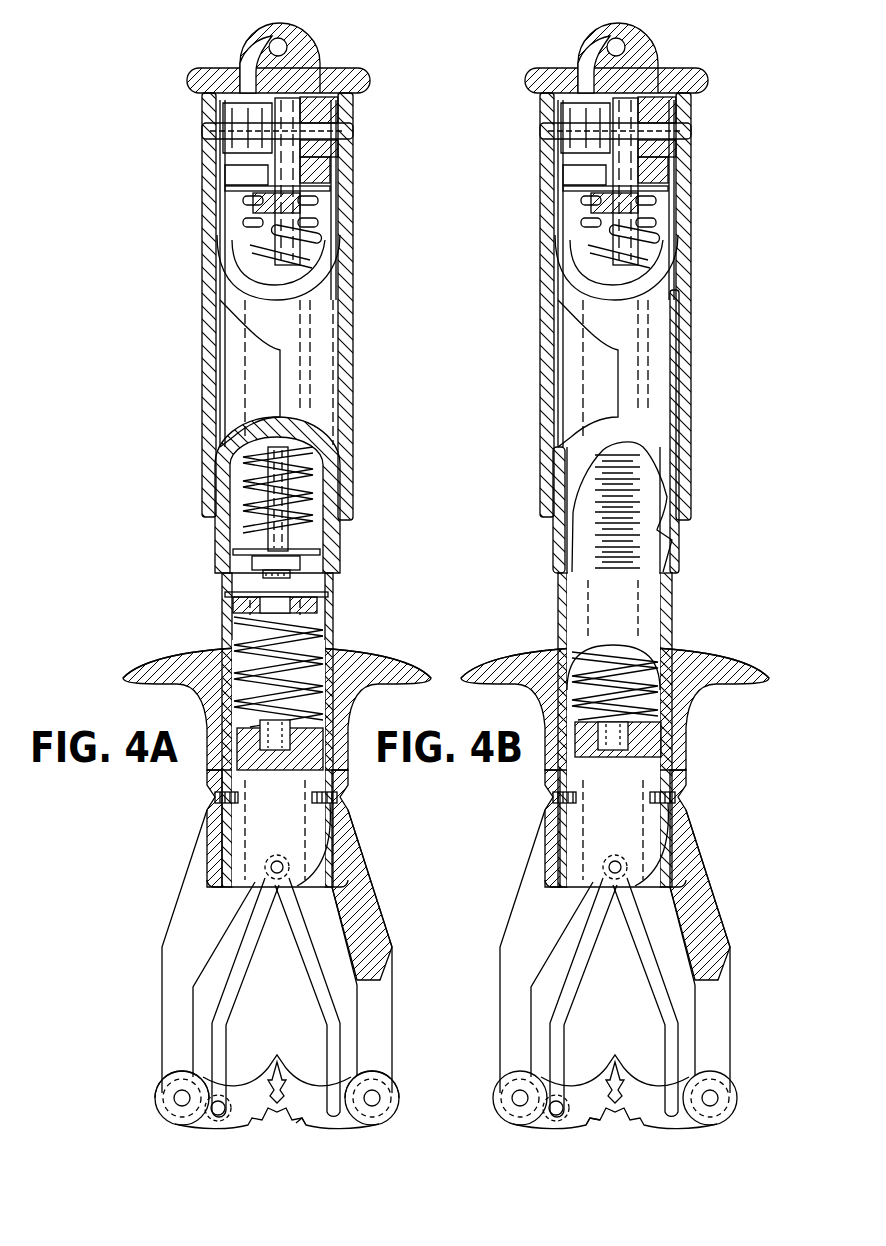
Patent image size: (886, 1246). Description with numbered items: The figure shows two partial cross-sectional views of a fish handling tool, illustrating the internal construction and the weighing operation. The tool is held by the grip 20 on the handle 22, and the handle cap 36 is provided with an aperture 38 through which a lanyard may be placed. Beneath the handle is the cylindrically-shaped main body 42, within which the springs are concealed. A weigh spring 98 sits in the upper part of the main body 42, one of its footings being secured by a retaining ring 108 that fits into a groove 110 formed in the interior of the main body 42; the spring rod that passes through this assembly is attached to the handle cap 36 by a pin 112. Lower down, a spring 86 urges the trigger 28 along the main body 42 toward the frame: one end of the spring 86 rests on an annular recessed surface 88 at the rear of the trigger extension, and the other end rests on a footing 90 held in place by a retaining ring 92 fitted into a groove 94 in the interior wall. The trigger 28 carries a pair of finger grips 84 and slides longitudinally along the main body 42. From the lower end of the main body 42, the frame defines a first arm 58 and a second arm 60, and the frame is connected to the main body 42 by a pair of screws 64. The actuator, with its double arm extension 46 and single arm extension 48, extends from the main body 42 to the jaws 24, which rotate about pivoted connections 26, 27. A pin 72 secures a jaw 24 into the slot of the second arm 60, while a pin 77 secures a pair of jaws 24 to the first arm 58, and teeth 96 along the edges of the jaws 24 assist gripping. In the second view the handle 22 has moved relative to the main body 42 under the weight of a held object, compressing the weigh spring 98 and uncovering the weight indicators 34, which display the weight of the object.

In FIG. 4A, the grip 20 is at (353, 333).
In FIG. 4B, the grip 20 is at (645, 306).
In FIG. 4A, the handle 22 is at (341, 537).
In FIG. 4B, the handle 22 is at (650, 431).
In FIG. 4A, the jaws 24 is at (172, 1130).
In FIG. 4B, the jaws 24 is at (643, 1104).
In FIG. 4A, the pivoted connection 26 is at (143, 1078).
In FIG. 4A, the pivoted connection 27 is at (402, 1083).
In FIG. 4A, the trigger 28 is at (118, 672).
In FIG. 4B, the trigger 28 is at (642, 655).
In FIG. 4B, the indicators 34 is at (656, 525).
In FIG. 4A, the handle cap 36 is at (190, 77).
In FIG. 4B, the handle cap 36 is at (579, 64).
In FIG. 4A, the aperture 38 is at (283, 45).
In FIG. 4B, the aperture 38 is at (645, 50).
In FIG. 4A, the main body 42 is at (330, 583).
In FIG. 4B, the main body 42 is at (657, 667).
In FIG. 4B, the double arm extension 46 is at (642, 997).
In FIG. 4A, the single arm extension 48 is at (235, 990).
In FIG. 4A, the first arm 58 is at (177, 912).
In FIG. 4B, the second arm 60 is at (735, 951).
In FIG. 4A, the screws 64 is at (348, 797).
In FIG. 4B, the screws 64 is at (648, 804).
In FIG. 4B, the pin 72 is at (749, 1093).
In FIG. 4A, the pin 77 is at (176, 1098).
In FIG. 4A, the finger grips 84 is at (400, 672).
In FIG. 4B, the finger grips 84 is at (639, 708).
In FIG. 4A, the spring 86 is at (233, 628).
In FIG. 4B, the recessed surface 88 is at (671, 739).
In FIG. 4A, the footing 90 is at (317, 615).
In FIG. 4B, the footing 90 is at (615, 686).
In FIG. 4A, the retaining ring 92 is at (248, 588).
In FIG. 4A, the groove 94 is at (334, 592).
In FIG. 4A, the teeth 96 is at (308, 1132).
In FIG. 4B, the teeth 96 is at (576, 1154).
In FIG. 4A, the weigh spring 98 is at (330, 235).
In FIG. 4B, the weigh spring 98 is at (682, 224).
In FIG. 4A, the retaining ring 108 is at (320, 193).
In FIG. 4A, the groove 110 is at (322, 190).
In FIG. 4A, the pin 112 is at (355, 127).
In FIG. 4B, the pin 112 is at (655, 127).